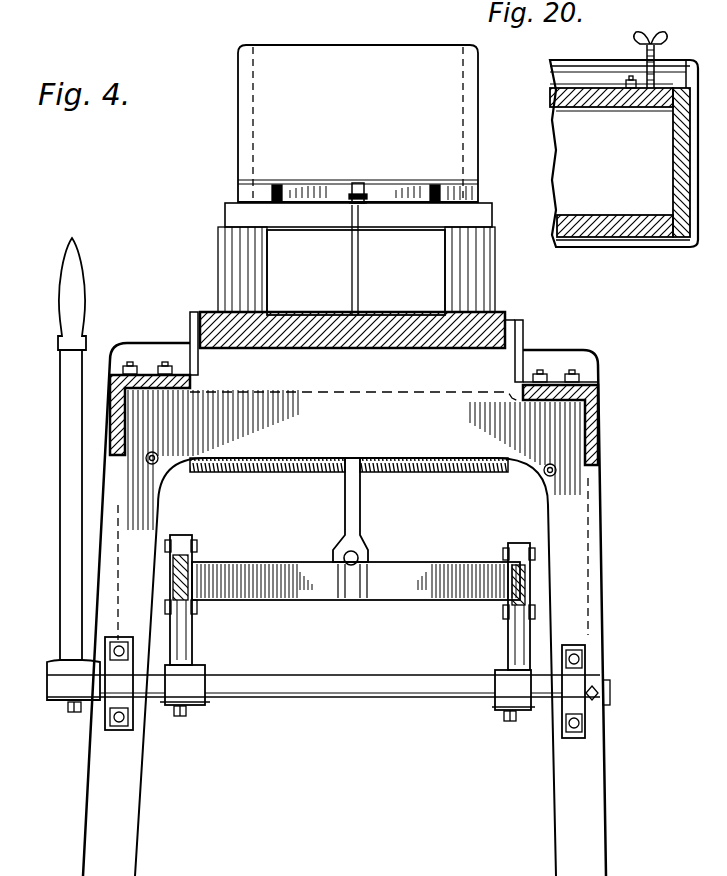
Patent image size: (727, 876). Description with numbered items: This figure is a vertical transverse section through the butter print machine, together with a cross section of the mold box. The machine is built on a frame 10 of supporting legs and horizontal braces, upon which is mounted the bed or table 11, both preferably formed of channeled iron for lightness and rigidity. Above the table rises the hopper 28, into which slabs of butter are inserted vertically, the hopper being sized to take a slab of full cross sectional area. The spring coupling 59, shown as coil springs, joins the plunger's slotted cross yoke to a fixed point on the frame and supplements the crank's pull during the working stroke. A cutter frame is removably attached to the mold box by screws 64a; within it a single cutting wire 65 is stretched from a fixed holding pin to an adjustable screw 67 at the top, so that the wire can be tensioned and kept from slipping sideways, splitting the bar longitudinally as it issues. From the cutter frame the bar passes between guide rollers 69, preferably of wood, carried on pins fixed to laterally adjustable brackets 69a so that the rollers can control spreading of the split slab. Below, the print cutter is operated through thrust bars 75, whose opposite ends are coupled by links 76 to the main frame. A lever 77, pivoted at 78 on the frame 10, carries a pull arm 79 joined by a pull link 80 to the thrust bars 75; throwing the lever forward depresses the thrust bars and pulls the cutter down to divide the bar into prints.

The frame 10 is at (600, 545).
The bed or table 11 is at (148, 390).
The hopper 28 is at (358, 123).
The spring coupling 59 is at (270, 474).
The screws 64a is at (278, 185).
The cutting wire 65 is at (360, 263).
The adjustable screw 67 is at (358, 183).
The guide rollers 69 is at (232, 262).
The brackets 69a is at (190, 328).
The thrust bars 75 is at (186, 575).
The links 76 is at (345, 506).
The lever 77 is at (62, 478).
The pivot 78 is at (335, 698).
The pull arm 79 is at (192, 640).
The pull link 80 is at (197, 610).